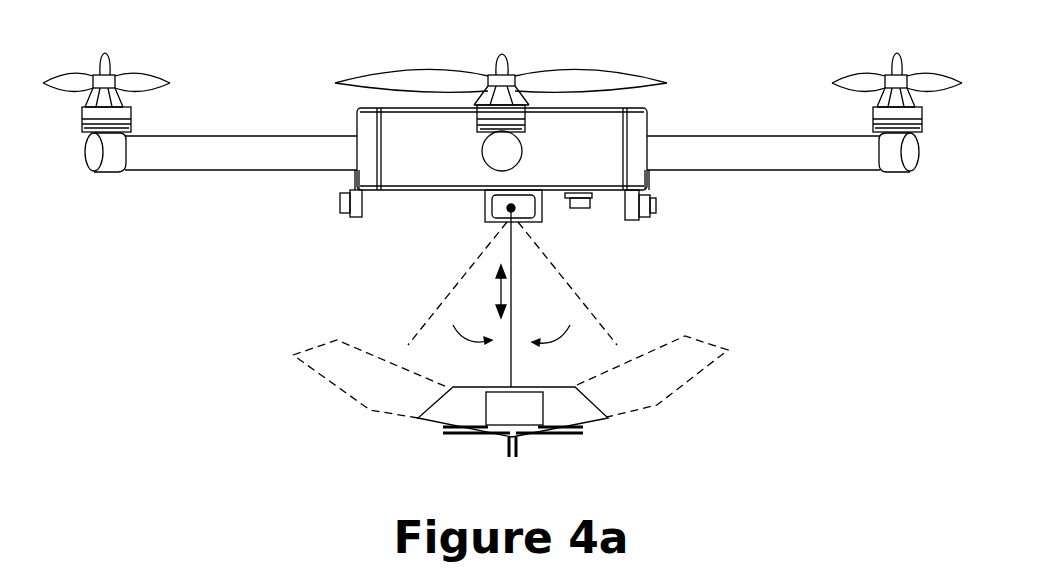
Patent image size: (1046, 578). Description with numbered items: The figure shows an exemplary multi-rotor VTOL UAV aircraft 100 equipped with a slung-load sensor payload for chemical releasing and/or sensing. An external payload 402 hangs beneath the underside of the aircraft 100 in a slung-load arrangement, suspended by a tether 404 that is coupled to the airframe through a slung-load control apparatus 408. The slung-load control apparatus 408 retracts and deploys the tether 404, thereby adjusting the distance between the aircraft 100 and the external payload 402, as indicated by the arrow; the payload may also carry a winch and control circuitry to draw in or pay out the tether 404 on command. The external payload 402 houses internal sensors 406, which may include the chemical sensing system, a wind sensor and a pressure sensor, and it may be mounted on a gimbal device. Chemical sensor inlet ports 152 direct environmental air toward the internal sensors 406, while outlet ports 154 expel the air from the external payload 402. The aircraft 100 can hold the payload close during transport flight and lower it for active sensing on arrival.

The aircraft 100 is at (228, 62).
The slung-load control apparatus 408 is at (486, 210).
The tether 404 is at (514, 299).
The external payload 402 is at (490, 386).
The internal sensors 406 is at (514, 408).
The chemical sensor inlet ports 152 is at (446, 430).
The outlet ports 154 is at (519, 447).